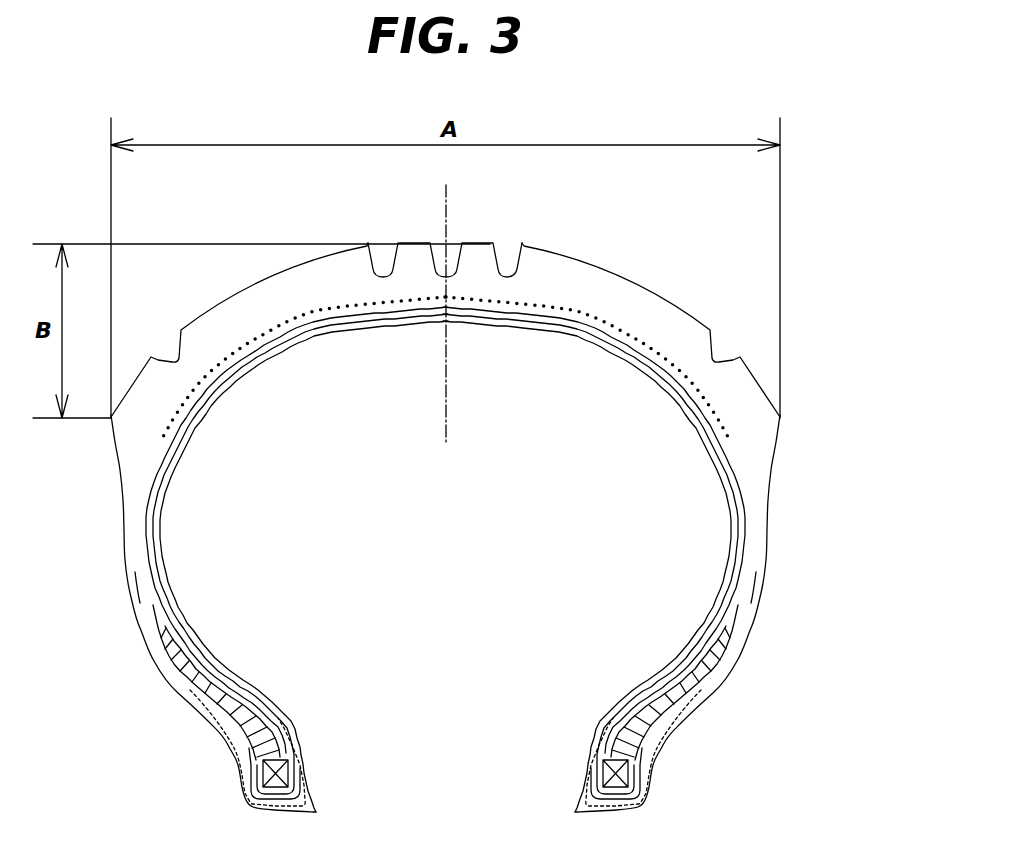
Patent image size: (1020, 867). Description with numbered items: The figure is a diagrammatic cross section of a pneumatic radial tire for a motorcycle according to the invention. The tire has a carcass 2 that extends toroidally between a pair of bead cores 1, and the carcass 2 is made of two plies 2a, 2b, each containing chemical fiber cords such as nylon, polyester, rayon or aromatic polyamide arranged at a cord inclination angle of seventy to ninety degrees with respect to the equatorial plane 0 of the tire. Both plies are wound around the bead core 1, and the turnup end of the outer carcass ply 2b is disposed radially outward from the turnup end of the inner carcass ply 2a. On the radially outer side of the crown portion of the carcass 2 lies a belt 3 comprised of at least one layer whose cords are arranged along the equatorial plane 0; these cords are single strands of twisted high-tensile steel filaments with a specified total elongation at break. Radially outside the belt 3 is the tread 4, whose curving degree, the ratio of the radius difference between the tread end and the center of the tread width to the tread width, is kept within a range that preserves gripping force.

The equatorial plane 0 is at (446, 222).
The bead core 1 is at (620, 775).
The carcass 2 is at (768, 616).
The carcass ply 2a is at (740, 497).
The carcass ply 2b is at (746, 652).
The belt 3 is at (593, 323).
The tread 4 is at (540, 249).